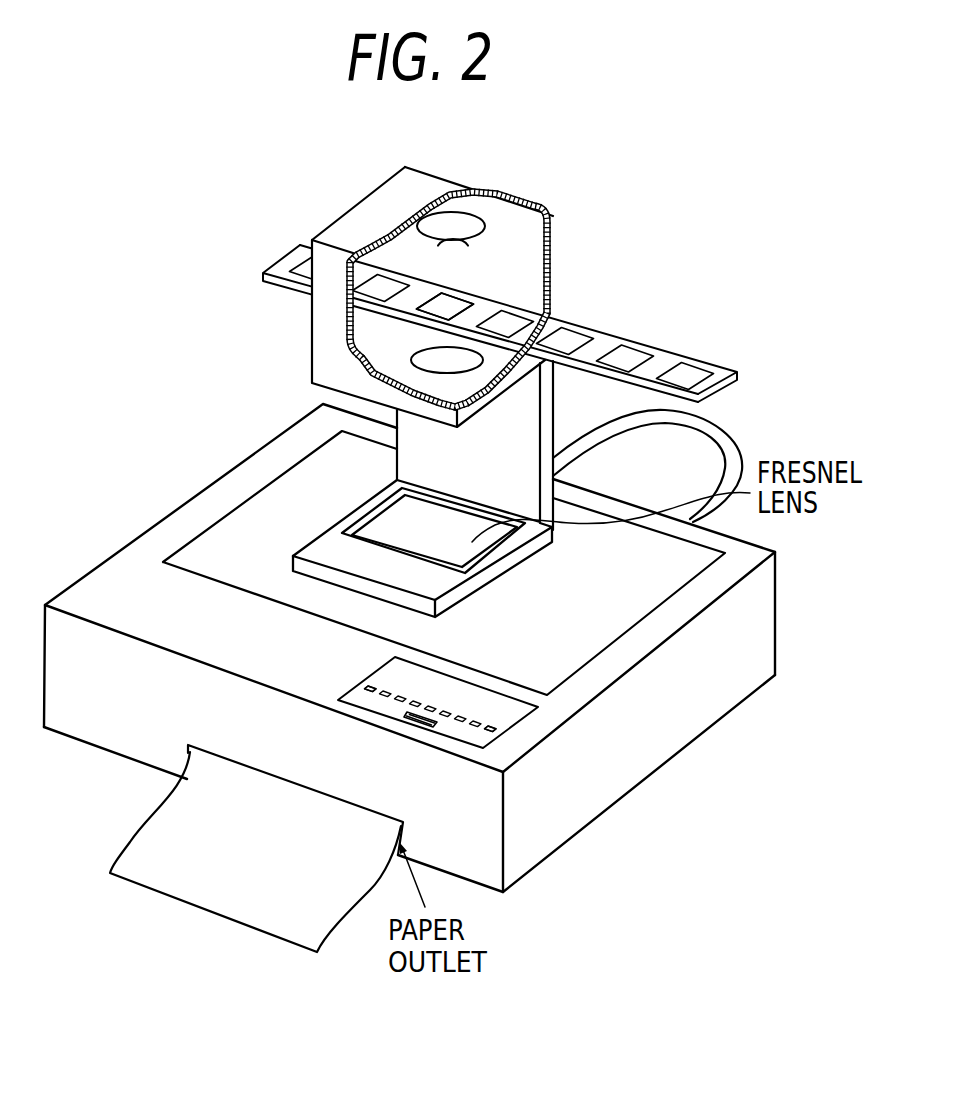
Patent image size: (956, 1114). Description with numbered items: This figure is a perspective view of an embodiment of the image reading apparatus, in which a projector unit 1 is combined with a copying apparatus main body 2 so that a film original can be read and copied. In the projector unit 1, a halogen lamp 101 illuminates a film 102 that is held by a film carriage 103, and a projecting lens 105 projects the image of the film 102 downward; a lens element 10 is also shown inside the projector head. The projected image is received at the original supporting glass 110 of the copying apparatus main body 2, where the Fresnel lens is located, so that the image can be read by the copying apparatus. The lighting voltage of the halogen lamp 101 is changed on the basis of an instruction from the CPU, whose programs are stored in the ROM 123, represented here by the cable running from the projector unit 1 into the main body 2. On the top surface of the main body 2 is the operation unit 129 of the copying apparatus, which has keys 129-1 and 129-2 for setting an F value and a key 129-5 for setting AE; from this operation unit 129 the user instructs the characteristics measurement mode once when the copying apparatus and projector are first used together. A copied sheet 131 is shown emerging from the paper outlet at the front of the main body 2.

The image reading head unit 1 is at (352, 225).
The main body (printer base) 2 is at (672, 735).
The light source lens 10 is at (457, 230).
The halogen lamp 101 is at (453, 254).
The film 102 is at (432, 309).
The film carriage 103 is at (602, 343).
The projecting lens 105 is at (417, 349).
The original supporting glass 110 is at (645, 580).
The ROM 123 is at (722, 427).
The operation unit 129 is at (503, 722).
The key 129-1 is at (503, 708).
The key 129-2 is at (389, 676).
The key 129-5 is at (430, 727).
The recording paper 131 is at (237, 908).